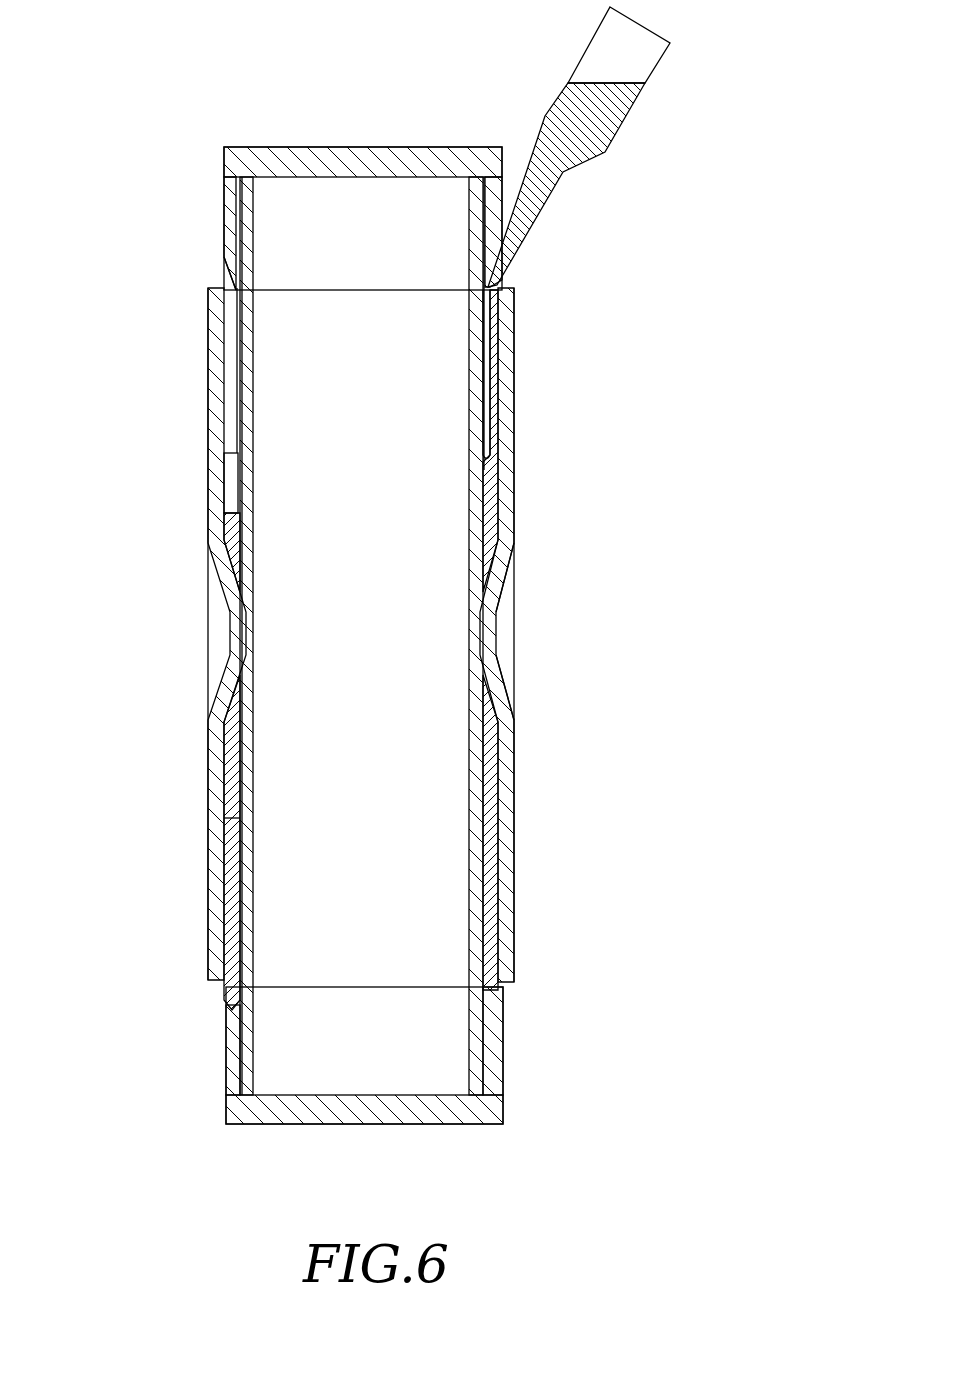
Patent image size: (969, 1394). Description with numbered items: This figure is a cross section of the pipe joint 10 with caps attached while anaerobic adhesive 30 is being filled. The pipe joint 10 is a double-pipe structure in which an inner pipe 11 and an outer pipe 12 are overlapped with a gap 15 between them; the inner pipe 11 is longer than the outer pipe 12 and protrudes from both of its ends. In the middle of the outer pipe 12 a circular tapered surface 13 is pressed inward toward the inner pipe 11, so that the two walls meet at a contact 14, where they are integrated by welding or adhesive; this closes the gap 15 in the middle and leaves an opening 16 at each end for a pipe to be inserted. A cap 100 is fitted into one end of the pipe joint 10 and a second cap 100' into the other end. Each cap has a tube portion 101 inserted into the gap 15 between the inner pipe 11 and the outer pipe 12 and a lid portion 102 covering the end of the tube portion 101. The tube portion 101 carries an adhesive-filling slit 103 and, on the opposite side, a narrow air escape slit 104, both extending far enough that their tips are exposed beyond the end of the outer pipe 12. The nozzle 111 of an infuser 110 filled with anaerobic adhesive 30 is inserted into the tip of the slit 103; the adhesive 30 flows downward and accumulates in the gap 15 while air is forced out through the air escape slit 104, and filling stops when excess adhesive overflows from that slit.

The pipe joint 10 is at (575, 618).
The inner pipe 11 is at (480, 818).
The outer pipe 12 is at (512, 750).
The tapered surface 13 is at (487, 590).
The contact 14 is at (232, 630).
The gap 15 is at (233, 500).
The opening 16 is at (230, 289).
The anaerobic adhesive 30 is at (232, 760).
The cap 100 is at (363, 152).
The cap 100' is at (386, 1107).
The tube portion 101 is at (232, 208).
The lid portion 102 is at (281, 147).
The adhesive-filling slit 103 is at (497, 278).
The air escape slit 104 is at (232, 388).
The infuser 110 is at (663, 55).
The nozzle 111 is at (538, 224).